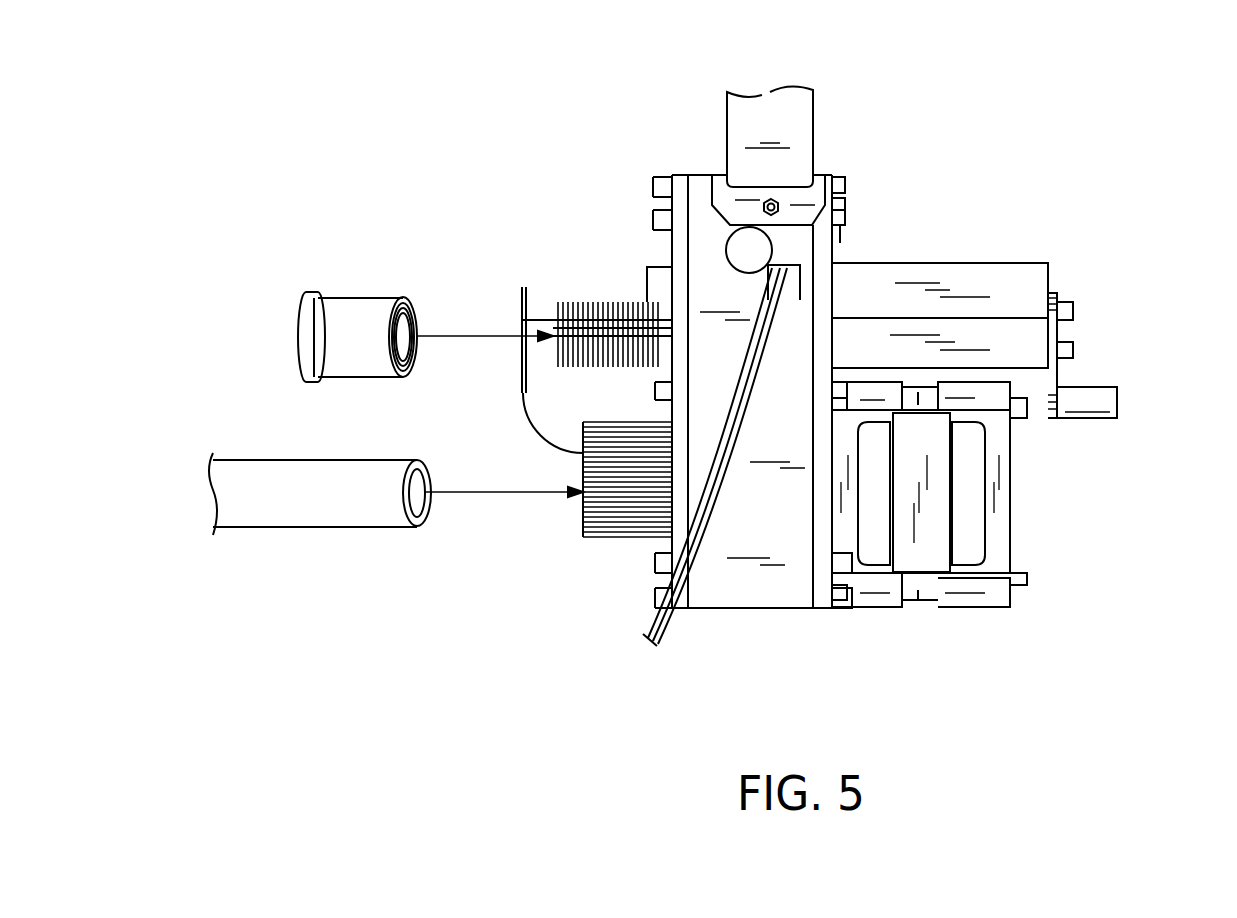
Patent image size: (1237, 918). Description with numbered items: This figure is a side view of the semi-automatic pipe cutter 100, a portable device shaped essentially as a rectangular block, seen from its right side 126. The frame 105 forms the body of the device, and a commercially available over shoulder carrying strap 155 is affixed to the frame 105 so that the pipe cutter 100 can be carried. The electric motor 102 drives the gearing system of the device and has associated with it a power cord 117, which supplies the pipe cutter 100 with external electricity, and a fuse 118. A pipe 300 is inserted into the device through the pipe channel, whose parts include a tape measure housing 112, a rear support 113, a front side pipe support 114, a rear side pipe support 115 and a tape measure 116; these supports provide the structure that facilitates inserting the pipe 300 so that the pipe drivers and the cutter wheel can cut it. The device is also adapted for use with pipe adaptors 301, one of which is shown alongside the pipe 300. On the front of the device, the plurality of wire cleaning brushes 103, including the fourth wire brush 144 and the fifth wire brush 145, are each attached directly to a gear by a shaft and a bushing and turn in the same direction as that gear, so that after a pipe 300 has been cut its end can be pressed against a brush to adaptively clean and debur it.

The semi-automatic pipe cutter 100 is at (440, 115).
The electric motor 102 is at (1003, 520).
The plurality of wire cleaning brushes 103 is at (553, 345).
The frame 105 is at (697, 192).
The tape measure housing 112 is at (555, 397).
The rear support 113 is at (1053, 337).
The front side pipe support 114 is at (653, 275).
The rear side pipe support 115 is at (1035, 283).
The tape measure 116 is at (542, 281).
The power cord 117 is at (677, 618).
The fuse 118 is at (757, 250).
The right side 126 is at (762, 586).
The fourth wire brush 144 is at (590, 302).
The fifth wire brush 145 is at (583, 520).
The over shoulder carrying strap 155 is at (793, 115).
The pipe 300 is at (260, 478).
The pipe adaptor 301 is at (350, 303).